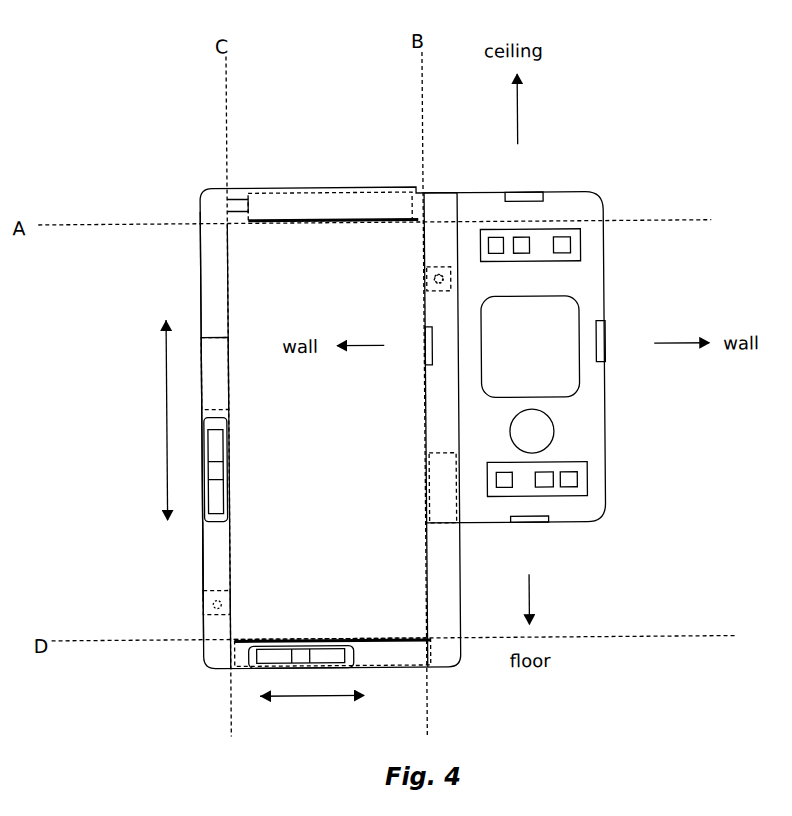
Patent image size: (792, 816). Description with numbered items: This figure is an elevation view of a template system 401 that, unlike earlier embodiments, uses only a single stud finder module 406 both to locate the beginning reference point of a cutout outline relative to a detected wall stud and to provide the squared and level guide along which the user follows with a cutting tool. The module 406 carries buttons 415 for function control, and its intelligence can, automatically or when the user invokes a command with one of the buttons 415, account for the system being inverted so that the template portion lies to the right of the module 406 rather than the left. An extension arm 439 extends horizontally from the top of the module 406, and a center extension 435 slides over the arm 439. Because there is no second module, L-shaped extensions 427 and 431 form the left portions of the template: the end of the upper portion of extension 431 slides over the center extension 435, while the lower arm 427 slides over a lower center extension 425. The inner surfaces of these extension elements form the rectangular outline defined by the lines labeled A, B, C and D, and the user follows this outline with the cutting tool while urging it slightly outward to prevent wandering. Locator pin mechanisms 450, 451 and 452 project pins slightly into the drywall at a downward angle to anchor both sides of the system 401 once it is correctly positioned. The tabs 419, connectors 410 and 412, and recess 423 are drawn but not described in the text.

The template system 401 is at (285, 140).
The stud finder module 406 is at (606, 207).
The bottom connector 410 is at (268, 648).
The side connector 412 is at (226, 470).
The buttons 415 is at (585, 247).
The mounting tab 419 is at (532, 188).
The connector recess 423 is at (430, 562).
The center extension 425 is at (357, 655).
The L-shaped extension 427 is at (207, 553).
The L-shaped extension 431 is at (206, 265).
The center extension 435 is at (240, 208).
The extension arm 439 is at (392, 210).
The locator pin mechanism 450 is at (450, 283).
The locator pin mechanism 451 is at (435, 283).
The locator pin mechanism 452 is at (215, 613).